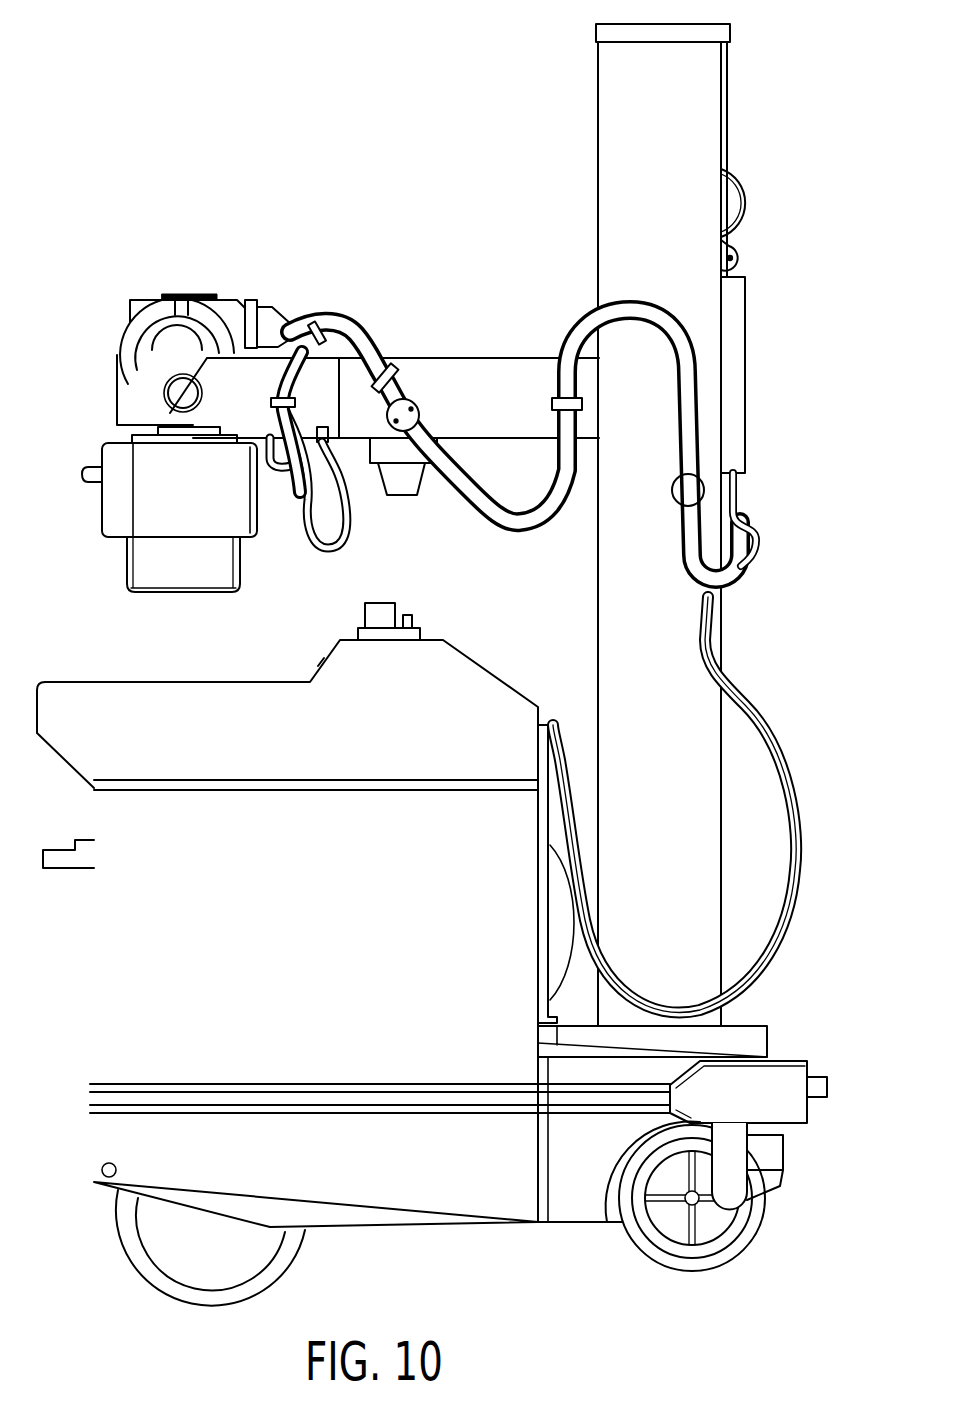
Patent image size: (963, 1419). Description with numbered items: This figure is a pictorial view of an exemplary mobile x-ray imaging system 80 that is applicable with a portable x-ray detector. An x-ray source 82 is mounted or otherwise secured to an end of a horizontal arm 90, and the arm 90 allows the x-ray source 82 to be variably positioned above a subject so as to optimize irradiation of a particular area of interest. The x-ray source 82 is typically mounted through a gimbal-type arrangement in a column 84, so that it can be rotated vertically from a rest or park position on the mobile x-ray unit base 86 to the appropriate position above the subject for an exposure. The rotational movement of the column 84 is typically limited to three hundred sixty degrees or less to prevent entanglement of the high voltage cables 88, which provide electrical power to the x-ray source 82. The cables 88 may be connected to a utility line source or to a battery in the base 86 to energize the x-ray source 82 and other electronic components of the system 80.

The mobile x-ray imaging system 80 is at (764, 224).
The x-ray source 82 is at (170, 356).
The column 84 is at (681, 130).
The mobile x-ray unit base 86 is at (303, 945).
The high voltage cables 88 is at (758, 746).
The horizontal arm 90 is at (509, 410).